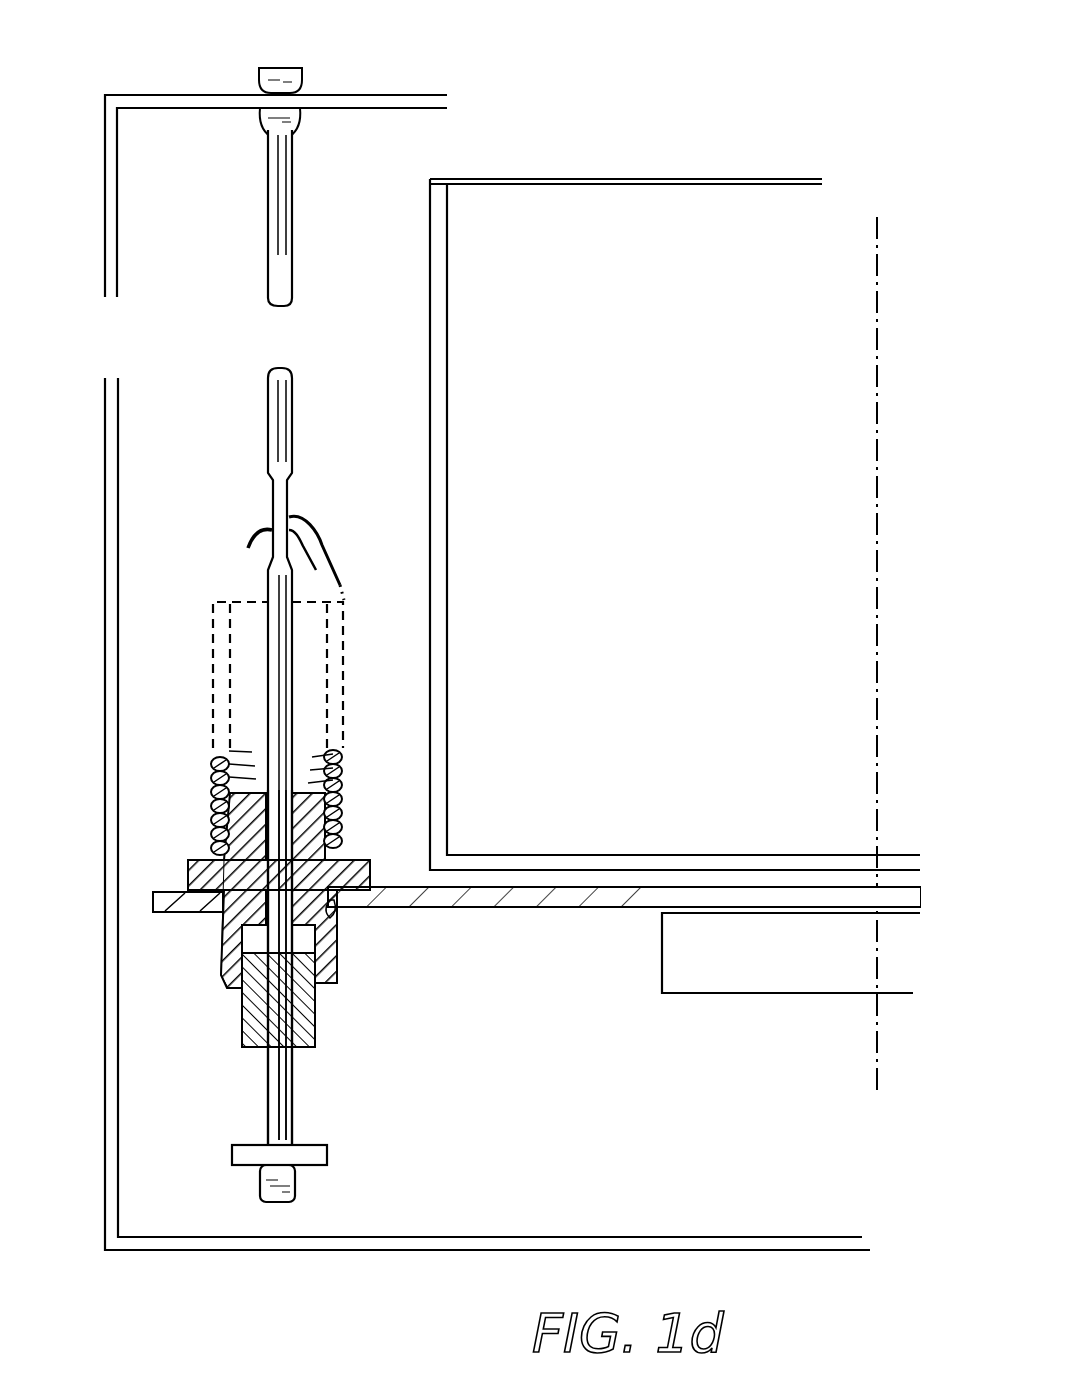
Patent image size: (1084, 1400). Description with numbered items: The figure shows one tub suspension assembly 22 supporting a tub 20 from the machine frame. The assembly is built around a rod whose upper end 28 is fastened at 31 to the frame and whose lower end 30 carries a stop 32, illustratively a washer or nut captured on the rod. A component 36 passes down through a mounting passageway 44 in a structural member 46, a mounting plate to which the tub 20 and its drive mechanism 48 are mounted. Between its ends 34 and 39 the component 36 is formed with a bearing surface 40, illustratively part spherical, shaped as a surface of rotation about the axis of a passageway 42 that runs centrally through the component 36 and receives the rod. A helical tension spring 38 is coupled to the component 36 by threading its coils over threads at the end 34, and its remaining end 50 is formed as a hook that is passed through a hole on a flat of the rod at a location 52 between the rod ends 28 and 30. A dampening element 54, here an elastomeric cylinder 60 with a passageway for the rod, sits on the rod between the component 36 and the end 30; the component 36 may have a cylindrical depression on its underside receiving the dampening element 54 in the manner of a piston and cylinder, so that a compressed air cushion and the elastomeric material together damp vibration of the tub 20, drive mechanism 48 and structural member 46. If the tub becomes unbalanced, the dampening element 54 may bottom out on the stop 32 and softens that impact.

The tub 20 is at (452, 588).
The tub suspension assembly 22 is at (380, 186).
The end of rod 28 is at (248, 66).
The end of rod 30 is at (338, 1185).
The fastening location 31 is at (300, 104).
The stop 32 is at (303, 1150).
The end of component 34 is at (320, 810).
The component 36 is at (365, 921).
The tension spring 38 is at (335, 712).
The end of component 39 is at (215, 976).
The bearing surface 40 is at (228, 902).
The passageway 42 is at (283, 873).
The mounting passageway 44 is at (335, 918).
The structural member 46 is at (617, 900).
The drive mechanism 48 is at (805, 956).
The end of spring 50 is at (301, 503).
The location 52 is at (266, 517).
The dampening element 54 is at (240, 993).
The elastomeric cylinder 60 is at (318, 1022).